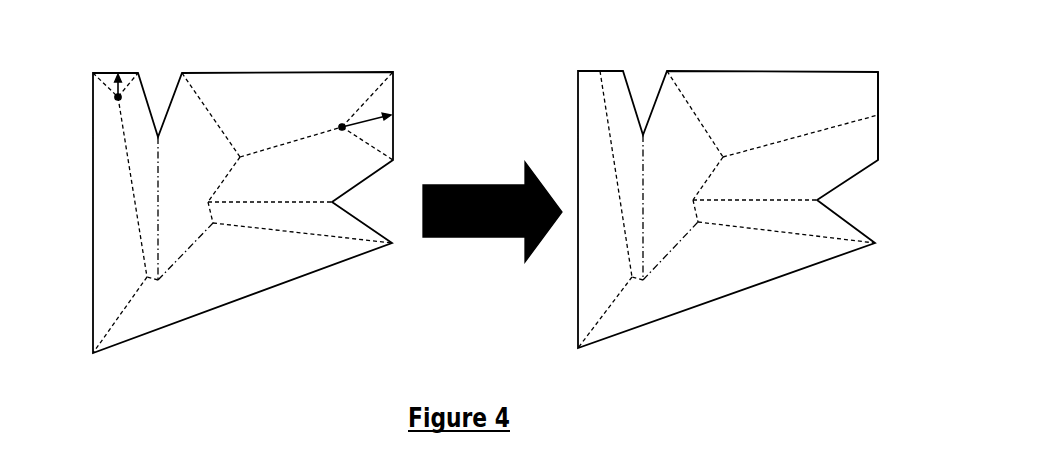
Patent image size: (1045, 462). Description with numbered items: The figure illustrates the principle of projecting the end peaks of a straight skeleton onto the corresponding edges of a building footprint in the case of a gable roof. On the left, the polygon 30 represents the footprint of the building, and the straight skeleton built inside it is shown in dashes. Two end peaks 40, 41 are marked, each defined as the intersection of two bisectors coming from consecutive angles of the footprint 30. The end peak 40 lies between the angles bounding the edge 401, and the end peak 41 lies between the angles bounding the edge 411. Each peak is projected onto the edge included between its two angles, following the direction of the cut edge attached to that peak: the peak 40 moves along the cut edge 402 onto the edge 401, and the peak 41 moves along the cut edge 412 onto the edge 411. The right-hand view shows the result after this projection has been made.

The polygon 30 is at (287, 283).
The end peak 40 is at (114, 100).
The end peak 41 is at (340, 131).
The edge 401 is at (593, 71).
The cut edge 402 is at (623, 218).
The edge 411 is at (878, 92).
The cut edge 412 is at (782, 141).